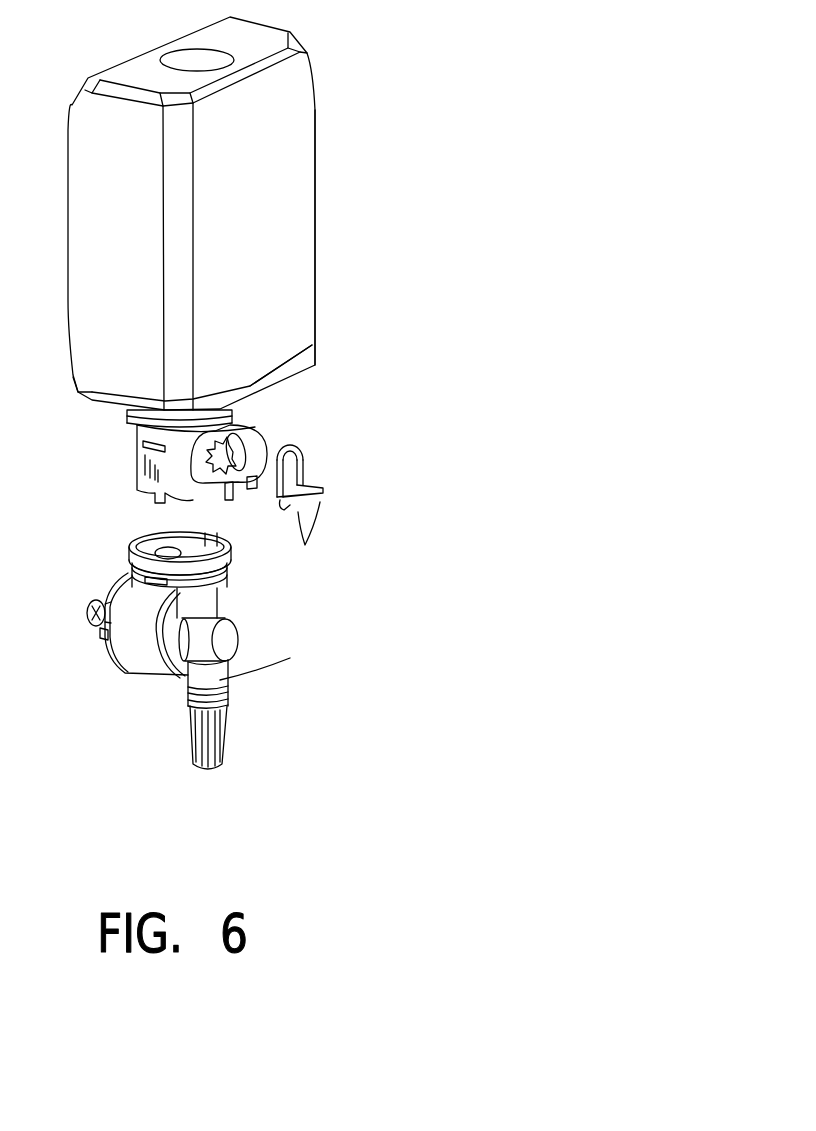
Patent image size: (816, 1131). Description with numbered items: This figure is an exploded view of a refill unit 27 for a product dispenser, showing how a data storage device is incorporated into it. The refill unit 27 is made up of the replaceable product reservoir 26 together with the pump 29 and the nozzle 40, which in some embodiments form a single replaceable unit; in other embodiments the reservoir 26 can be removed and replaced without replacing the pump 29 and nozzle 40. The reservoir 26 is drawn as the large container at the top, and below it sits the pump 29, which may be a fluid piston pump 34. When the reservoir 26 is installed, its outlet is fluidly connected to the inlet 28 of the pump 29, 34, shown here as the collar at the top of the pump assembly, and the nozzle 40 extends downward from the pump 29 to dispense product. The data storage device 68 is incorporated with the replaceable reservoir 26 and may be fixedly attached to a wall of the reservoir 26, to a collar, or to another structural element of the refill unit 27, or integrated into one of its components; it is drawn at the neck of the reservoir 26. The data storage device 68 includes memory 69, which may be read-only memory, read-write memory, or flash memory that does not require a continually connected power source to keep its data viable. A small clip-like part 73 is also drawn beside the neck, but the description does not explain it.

The product reservoir 26 is at (282, 153).
The refill unit 27 is at (273, 215).
The memory 69 is at (234, 465).
The data storage device 68 is at (244, 442).
The retaining clip 73 is at (315, 511).
The inlet 28 is at (150, 533).
The fluid piston pump 34 is at (127, 632).
The pump 29 is at (175, 628).
The nozzle 40 is at (203, 740).